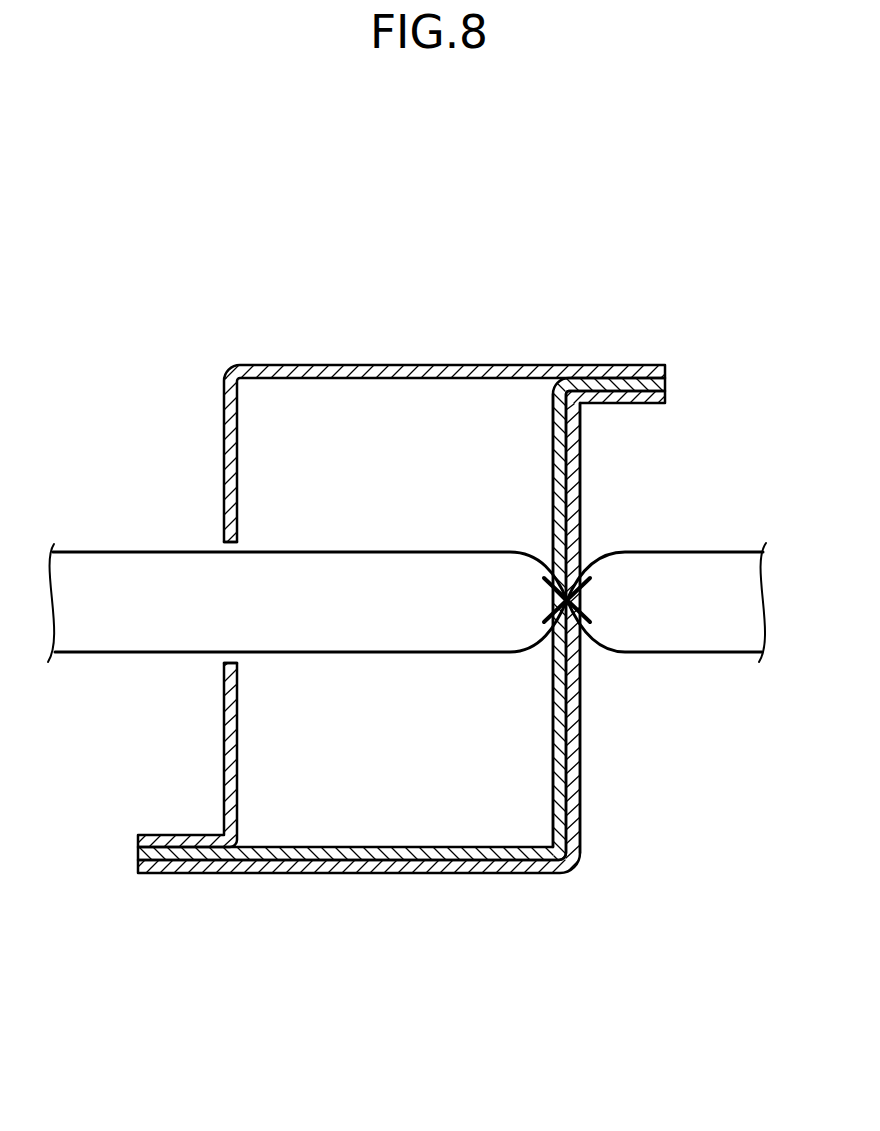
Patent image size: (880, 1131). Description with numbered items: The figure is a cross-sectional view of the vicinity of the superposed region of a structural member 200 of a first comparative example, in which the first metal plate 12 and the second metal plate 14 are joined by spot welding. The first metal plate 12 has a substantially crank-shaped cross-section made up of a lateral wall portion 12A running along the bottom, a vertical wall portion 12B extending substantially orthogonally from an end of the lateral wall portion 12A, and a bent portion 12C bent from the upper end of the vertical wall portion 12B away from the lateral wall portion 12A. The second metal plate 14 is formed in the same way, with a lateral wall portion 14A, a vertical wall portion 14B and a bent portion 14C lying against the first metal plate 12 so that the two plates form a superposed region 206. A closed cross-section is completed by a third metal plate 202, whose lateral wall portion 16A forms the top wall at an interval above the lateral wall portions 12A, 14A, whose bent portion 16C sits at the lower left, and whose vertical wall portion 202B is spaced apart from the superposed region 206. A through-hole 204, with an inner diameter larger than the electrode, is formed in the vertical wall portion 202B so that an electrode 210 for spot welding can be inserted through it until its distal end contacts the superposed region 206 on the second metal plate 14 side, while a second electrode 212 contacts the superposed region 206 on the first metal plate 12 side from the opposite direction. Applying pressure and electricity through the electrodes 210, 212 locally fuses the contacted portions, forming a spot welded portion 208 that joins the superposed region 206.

The structural member 200 is at (374, 284).
The third metal plate 202 is at (223, 425).
The vertical wall portion 202B is at (228, 478).
The through-hole 204 is at (232, 545).
The superposed region 206 is at (583, 484).
The spot welded portion 208 is at (580, 600).
The electrode 210 is at (410, 551).
The electrode 212 is at (731, 552).
The first metal plate 12 is at (583, 786).
The lateral wall portion 12A is at (333, 866).
The vertical wall portion 12B is at (574, 733).
The bent portion 12C is at (627, 398).
The second metal plate 14 is at (405, 847).
The lateral wall portion 14A is at (318, 853).
The vertical wall portion 14B is at (555, 737).
The bent portion 14C is at (662, 384).
The lateral wall portion 16A is at (465, 365).
The bent portion 16C is at (172, 843).